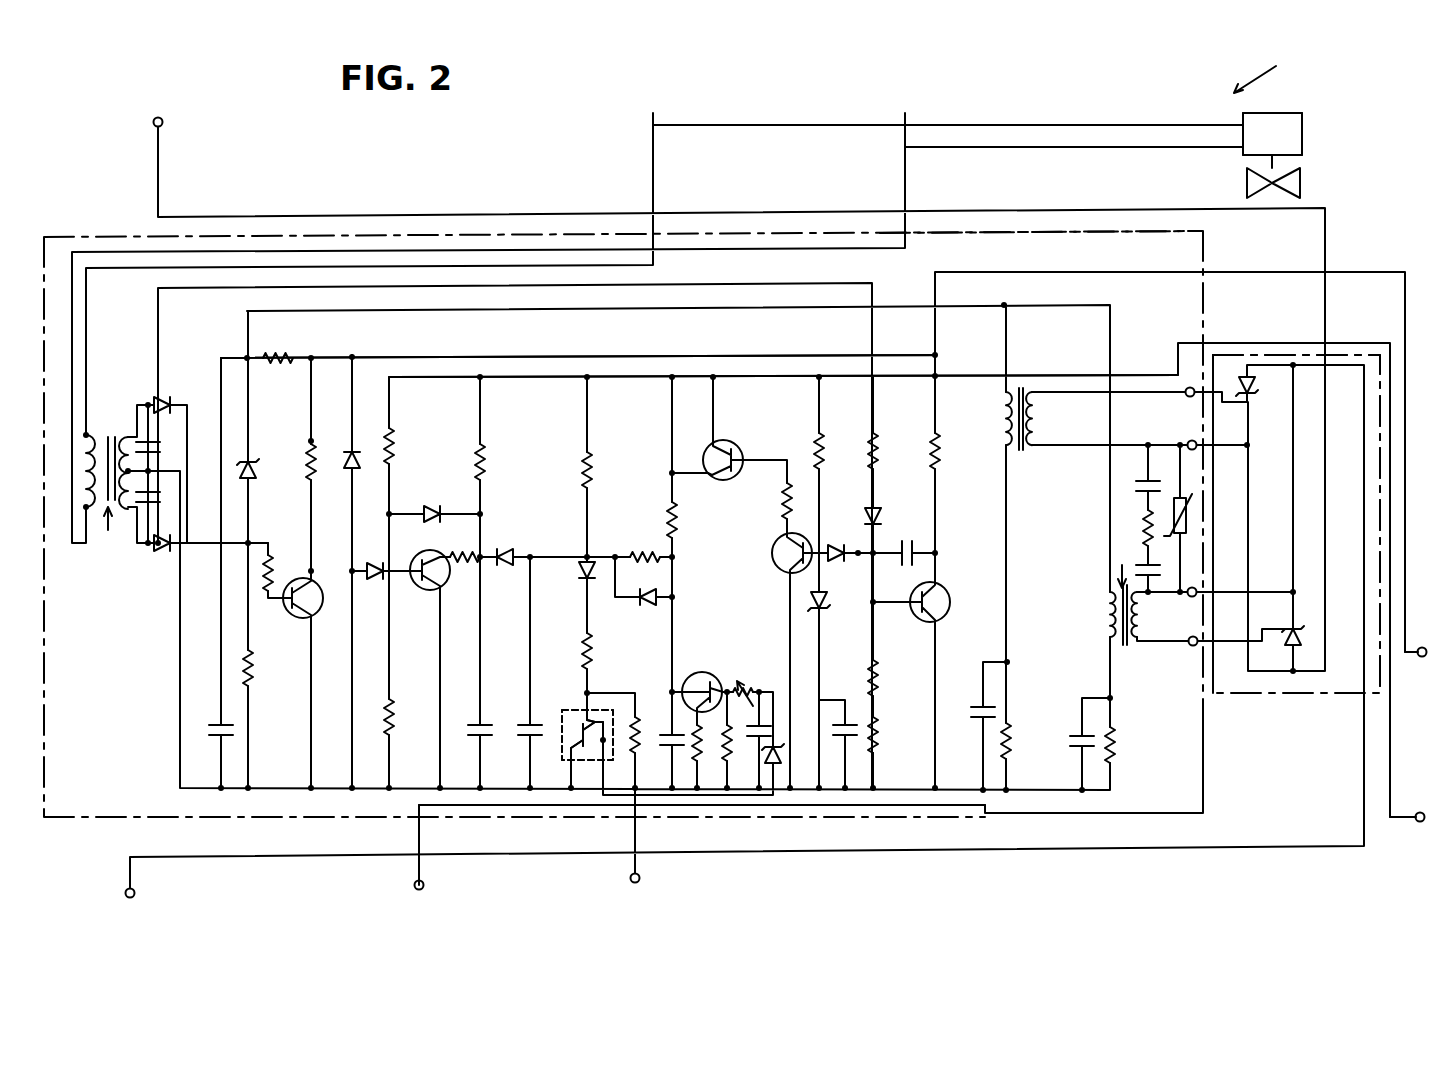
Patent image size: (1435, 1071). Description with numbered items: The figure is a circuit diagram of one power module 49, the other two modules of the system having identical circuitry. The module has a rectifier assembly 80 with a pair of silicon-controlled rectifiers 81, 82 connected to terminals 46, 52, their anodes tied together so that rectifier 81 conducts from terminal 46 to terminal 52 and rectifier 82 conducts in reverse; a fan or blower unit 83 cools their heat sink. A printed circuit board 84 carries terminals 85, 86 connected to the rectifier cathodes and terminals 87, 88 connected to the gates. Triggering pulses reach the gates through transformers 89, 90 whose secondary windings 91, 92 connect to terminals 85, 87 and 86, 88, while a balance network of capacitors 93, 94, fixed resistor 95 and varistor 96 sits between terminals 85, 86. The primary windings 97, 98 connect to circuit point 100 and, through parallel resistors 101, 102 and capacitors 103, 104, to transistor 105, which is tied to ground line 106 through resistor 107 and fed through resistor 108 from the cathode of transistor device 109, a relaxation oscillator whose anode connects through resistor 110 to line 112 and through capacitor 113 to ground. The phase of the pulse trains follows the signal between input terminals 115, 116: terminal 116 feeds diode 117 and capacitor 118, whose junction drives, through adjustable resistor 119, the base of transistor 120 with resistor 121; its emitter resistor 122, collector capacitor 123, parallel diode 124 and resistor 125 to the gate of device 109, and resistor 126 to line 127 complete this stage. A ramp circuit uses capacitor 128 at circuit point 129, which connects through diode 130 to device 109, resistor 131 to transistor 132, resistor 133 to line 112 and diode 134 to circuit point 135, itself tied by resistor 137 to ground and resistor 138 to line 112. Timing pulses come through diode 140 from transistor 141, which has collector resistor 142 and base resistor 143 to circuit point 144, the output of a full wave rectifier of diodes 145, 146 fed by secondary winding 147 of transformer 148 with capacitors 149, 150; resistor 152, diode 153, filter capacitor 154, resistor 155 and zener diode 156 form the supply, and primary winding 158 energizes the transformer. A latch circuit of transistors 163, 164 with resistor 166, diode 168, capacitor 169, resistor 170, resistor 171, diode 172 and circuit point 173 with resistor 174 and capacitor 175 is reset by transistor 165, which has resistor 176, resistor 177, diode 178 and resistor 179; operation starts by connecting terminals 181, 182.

The terminal 46 is at (136, 893).
The power module 49 is at (1269, 68).
The terminal 52 is at (163, 122).
The rectifier assembly 80 is at (1369, 348).
The silicon-controlled rectifier 81 is at (1256, 386).
The silicon-controlled rectifier 82 is at (1302, 637).
The fan or blower unit 83 is at (1321, 145).
The printed circuit board 84 is at (998, 231).
The terminal 85 is at (1190, 441).
The terminal 86 is at (1197, 594).
The terminal 87 is at (1186, 388).
The terminal 88 is at (1194, 648).
The transformer 89 is at (1021, 386).
The transformer 90 is at (1120, 576).
The secondary winding 91 is at (1036, 416).
The secondary winding 92 is at (1142, 626).
The capacitor 93 is at (1140, 484).
The capacitor 94 is at (1140, 568).
The fixed resistor 95 is at (1142, 526).
The varistor 96 is at (1172, 514).
The primary winding 97 is at (1004, 410).
The primary winding 98 is at (1108, 620).
The circuit point 100 is at (252, 357).
The resistor 101 is at (1010, 736).
The resistor 102 is at (1116, 752).
The capacitor 103 is at (976, 704).
The capacitor 104 is at (1075, 746).
The transistor 105 is at (575, 703).
The line 106 is at (588, 765).
The resistor 107 is at (640, 718).
The resistor 108 is at (590, 656).
The transistor device 109 is at (588, 582).
The resistor 110 is at (590, 475).
The line 112 is at (695, 376).
The capacitor 113 is at (530, 720).
The input terminal 115 is at (637, 884).
The input terminal 116 is at (700, 849).
The diode 117 is at (778, 770).
The capacitor 118 is at (762, 690).
The adjustable resistor 119 is at (746, 682).
The transistor 120 is at (712, 680).
The resistor 121 is at (729, 762).
The resistor 122 is at (699, 762).
The capacitor 123 is at (676, 750).
The diode 124 is at (656, 596).
The resistor 125 is at (645, 555).
The resistor 126 is at (677, 520).
The line 127 is at (620, 356).
The capacitor 128 is at (482, 720).
The circuit point 129 is at (485, 555).
The diode 130 is at (505, 555).
The resistor 131 is at (460, 555).
The transistor 132 is at (438, 590).
The resistor 133 is at (485, 452).
The diode 134 is at (430, 510).
The circuit point 135 is at (394, 512).
The resistor 137 is at (410, 690).
The resistor 138 is at (392, 445).
The diode 140 is at (373, 561).
The transistor 141 is at (300, 622).
The resistor 142 is at (308, 442).
The resistor 143 is at (270, 555).
The circuit point 144 is at (252, 543).
The diode 145 is at (160, 400).
The diode 146 is at (168, 550).
The secondary winding 147 is at (147, 400).
The transformer 148 is at (108, 530).
The capacitor 149 is at (152, 440).
The capacitor 150 is at (128, 512).
The resistor 152 is at (252, 684).
The diode 153 is at (250, 460).
The filter capacitor 154 is at (215, 726).
The resistor 155 is at (284, 363).
The zener diode 156 is at (350, 458).
The primary winding 158 is at (88, 510).
The transistor 163 is at (735, 445).
The transistor 164 is at (782, 566).
The transistor 165 is at (940, 590).
The resistor 166 is at (782, 502).
The diode 168 is at (822, 608).
The capacitor 169 is at (876, 765).
The resistor 170 is at (848, 790).
The resistor 171 is at (822, 450).
The diode 172 is at (838, 548).
The circuit point 173 is at (862, 552).
The resistor 174 is at (876, 682).
The capacitor 175 is at (912, 550).
The resistor 176 is at (938, 456).
The resistor 177 is at (876, 722).
The diode 178 is at (877, 516).
The resistor 179 is at (876, 445).
The terminal 181 is at (1418, 822).
The terminal 182 is at (1420, 658).